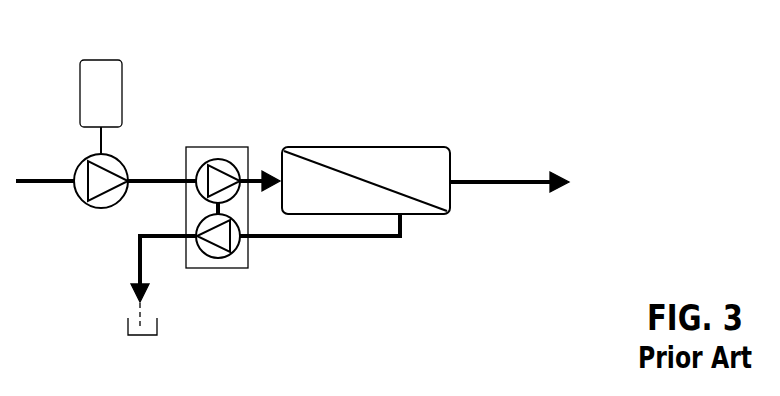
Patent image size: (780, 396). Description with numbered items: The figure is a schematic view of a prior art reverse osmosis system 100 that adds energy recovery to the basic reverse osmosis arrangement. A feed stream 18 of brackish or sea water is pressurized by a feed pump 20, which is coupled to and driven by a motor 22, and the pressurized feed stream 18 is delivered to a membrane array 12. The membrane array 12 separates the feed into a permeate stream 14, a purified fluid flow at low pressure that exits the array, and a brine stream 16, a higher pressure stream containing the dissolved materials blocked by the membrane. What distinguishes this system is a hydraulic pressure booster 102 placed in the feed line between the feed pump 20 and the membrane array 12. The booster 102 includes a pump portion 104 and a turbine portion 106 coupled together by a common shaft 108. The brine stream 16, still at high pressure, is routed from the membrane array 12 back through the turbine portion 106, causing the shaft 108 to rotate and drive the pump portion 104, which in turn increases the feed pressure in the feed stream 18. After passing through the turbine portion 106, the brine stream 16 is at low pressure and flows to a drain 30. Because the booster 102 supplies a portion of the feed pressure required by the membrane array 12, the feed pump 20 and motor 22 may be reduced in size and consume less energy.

The reverse osmosis system 100 is at (557, 70).
The membrane array 12 is at (377, 147).
The permeate stream 14 is at (483, 182).
The brine stream 16 is at (403, 223).
The feed stream 18 is at (147, 181).
The feed pump 20 is at (82, 200).
The motor 22 is at (101, 60).
The drain 30 is at (128, 323).
The hydraulic pressure booster 102 is at (235, 147).
The pump portion 104 is at (193, 170).
The turbine portion 106 is at (233, 256).
The common shaft 108 is at (220, 212).